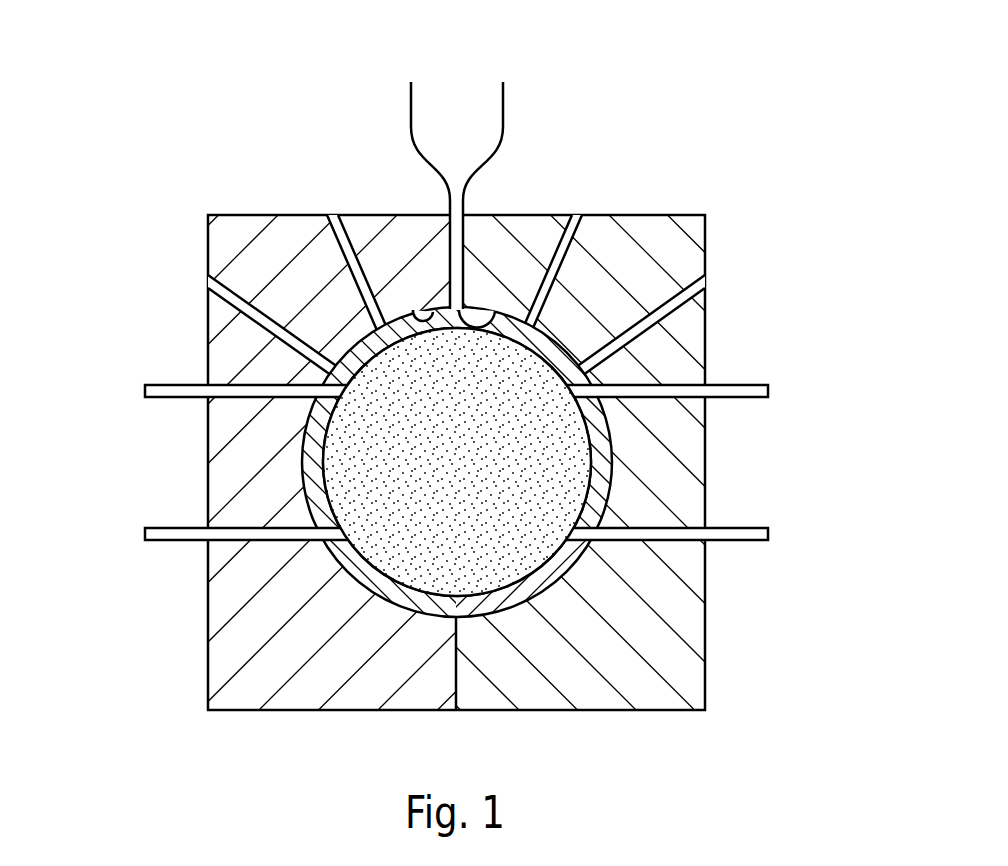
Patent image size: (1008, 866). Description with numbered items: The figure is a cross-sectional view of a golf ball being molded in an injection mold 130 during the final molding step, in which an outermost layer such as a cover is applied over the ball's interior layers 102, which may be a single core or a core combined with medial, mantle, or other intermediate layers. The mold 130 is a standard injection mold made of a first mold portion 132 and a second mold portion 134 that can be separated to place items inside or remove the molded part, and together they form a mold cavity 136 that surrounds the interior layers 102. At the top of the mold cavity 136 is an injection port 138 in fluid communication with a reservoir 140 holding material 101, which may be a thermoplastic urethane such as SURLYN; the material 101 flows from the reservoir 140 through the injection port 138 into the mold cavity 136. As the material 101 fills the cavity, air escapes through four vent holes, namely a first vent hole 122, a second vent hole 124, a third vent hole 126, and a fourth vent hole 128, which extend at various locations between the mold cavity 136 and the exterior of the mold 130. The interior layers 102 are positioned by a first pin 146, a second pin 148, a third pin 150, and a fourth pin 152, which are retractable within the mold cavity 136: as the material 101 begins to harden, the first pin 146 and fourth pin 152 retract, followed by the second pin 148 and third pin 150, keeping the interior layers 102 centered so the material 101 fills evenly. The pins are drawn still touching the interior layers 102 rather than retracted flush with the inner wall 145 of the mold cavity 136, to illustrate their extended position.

The material 101 is at (504, 382).
The interior layers 102 is at (433, 439).
The first vent hole 122 is at (688, 310).
The second vent hole 124 is at (583, 222).
The third vent hole 126 is at (337, 243).
The fourth vent hole 128 is at (227, 302).
The mold 130 is at (504, 427).
The first mold portion 132 is at (650, 230).
The second mold portion 134 is at (238, 228).
The mold cavity 136 is at (297, 458).
The injection port 138 is at (495, 300).
The reservoir 140 is at (437, 130).
The inner wall 145 is at (421, 302).
The first pin 146 is at (768, 536).
The second pin 148 is at (768, 390).
The third pin 150 is at (145, 390).
The fourth pin 152 is at (145, 535).